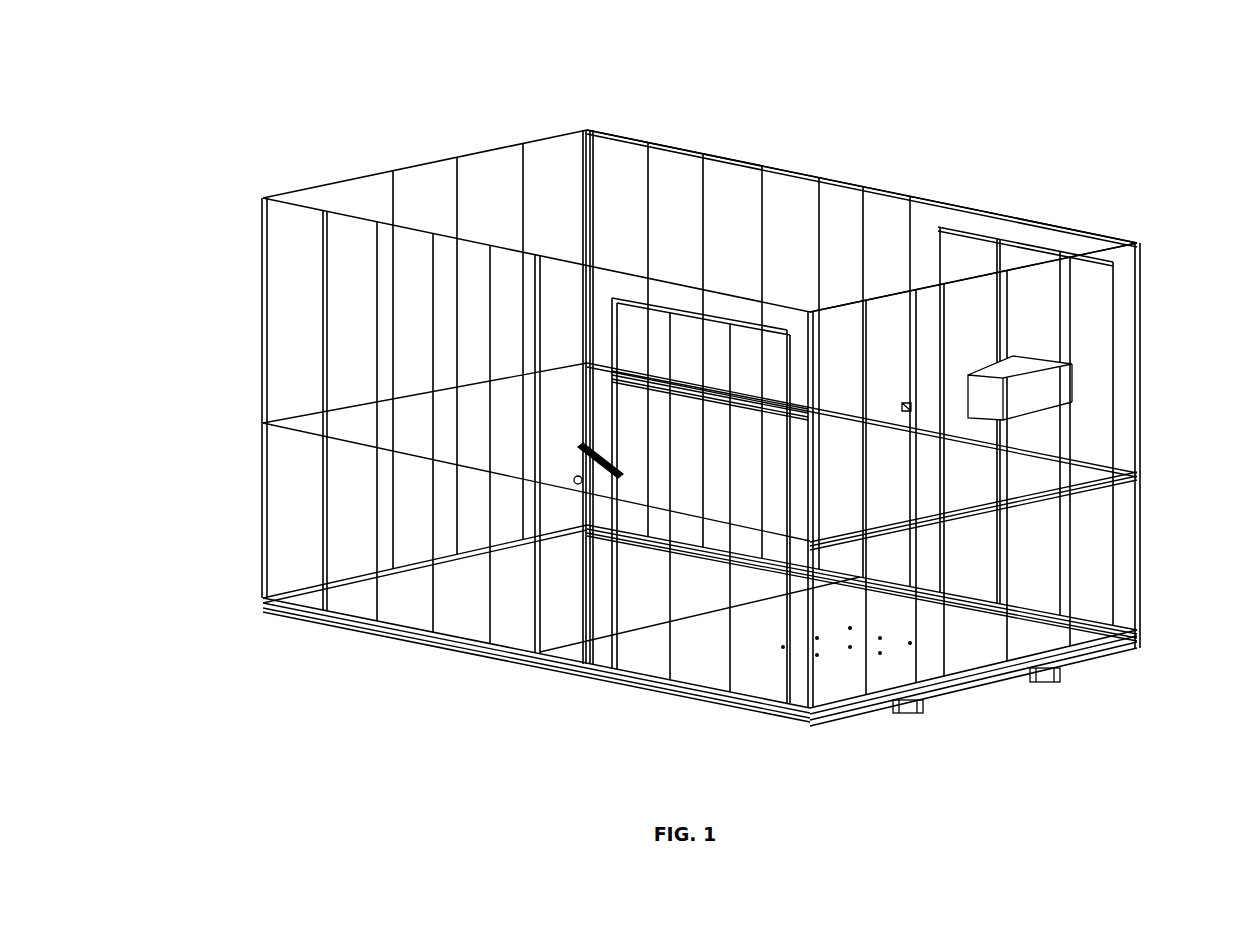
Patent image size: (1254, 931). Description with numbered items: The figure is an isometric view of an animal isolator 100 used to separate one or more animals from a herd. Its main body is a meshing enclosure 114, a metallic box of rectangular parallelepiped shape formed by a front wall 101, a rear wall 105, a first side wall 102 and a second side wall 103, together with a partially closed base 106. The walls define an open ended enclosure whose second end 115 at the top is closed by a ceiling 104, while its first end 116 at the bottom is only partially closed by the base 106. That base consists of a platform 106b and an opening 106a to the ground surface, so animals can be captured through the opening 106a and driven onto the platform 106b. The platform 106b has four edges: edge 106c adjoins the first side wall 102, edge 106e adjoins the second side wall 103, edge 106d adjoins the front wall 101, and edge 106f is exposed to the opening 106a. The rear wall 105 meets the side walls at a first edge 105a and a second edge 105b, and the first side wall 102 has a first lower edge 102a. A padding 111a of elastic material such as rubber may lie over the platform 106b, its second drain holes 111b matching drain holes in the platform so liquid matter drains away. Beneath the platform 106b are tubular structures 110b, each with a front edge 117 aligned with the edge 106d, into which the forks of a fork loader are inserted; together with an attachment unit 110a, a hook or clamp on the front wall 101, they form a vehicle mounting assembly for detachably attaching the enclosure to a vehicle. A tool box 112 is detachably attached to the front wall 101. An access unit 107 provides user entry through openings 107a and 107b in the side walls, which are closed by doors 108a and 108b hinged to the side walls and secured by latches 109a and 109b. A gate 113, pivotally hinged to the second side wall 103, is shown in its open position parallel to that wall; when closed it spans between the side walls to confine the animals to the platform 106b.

The animal isolator 100 is at (1088, 110).
The front wall 101 is at (1052, 331).
The first side wall 102 is at (372, 262).
The first lower edge 102a is at (270, 603).
The second side wall 103 is at (806, 202).
The ceiling 104 is at (670, 172).
The rear wall 105 is at (386, 190).
The first edge 105a is at (260, 330).
The second edge 105b is at (590, 178).
The partially closed base 106 is at (370, 627).
The opening 106a is at (475, 626).
The platform 106b is at (685, 663).
The edge 106c is at (738, 698).
The edge 106d is at (828, 714).
The edge 106e is at (1080, 624).
The edge 106f is at (630, 636).
The access unit 107 is at (641, 273).
The opening 107a is at (705, 596).
The opening 107b is at (1015, 310).
The door 108a is at (606, 330).
The door 108b is at (926, 226).
The latch 109a is at (585, 483).
The latch 109b is at (912, 409).
The attachment unit 110a is at (990, 508).
The tubular structures 110b is at (918, 708).
The padding 111a is at (1052, 678).
The second drain holes 111b is at (846, 665).
The tool box 112 is at (1036, 400).
The gate 113 is at (686, 376).
The meshing enclosure 114 is at (258, 506).
The second end 115 is at (1066, 227).
The first end 116 is at (300, 608).
The front edge 117 is at (925, 703).